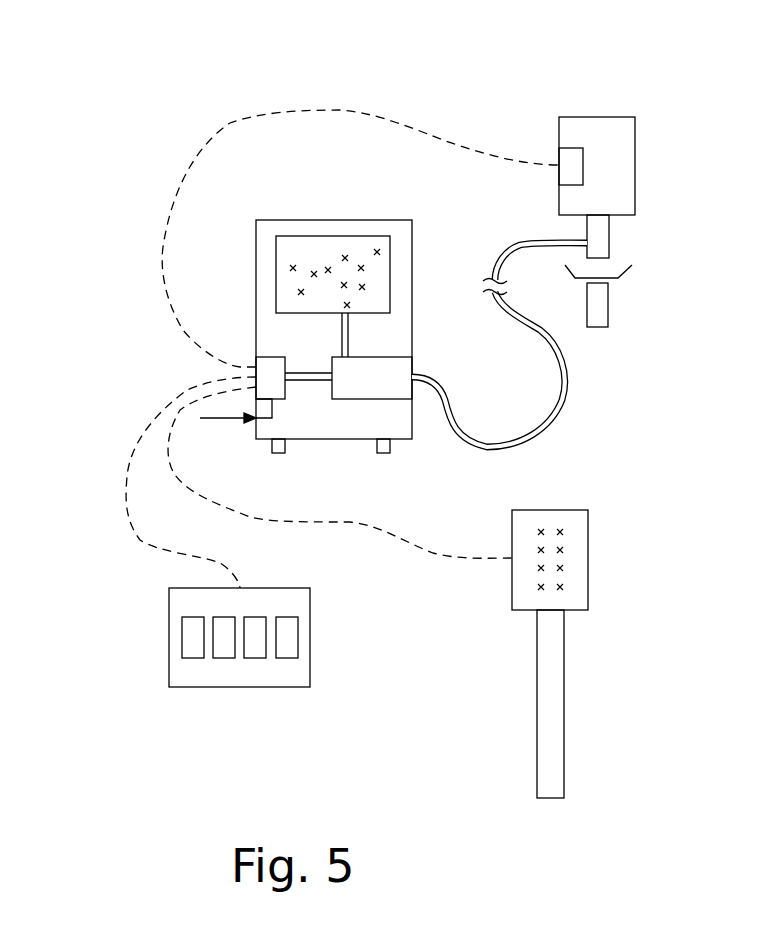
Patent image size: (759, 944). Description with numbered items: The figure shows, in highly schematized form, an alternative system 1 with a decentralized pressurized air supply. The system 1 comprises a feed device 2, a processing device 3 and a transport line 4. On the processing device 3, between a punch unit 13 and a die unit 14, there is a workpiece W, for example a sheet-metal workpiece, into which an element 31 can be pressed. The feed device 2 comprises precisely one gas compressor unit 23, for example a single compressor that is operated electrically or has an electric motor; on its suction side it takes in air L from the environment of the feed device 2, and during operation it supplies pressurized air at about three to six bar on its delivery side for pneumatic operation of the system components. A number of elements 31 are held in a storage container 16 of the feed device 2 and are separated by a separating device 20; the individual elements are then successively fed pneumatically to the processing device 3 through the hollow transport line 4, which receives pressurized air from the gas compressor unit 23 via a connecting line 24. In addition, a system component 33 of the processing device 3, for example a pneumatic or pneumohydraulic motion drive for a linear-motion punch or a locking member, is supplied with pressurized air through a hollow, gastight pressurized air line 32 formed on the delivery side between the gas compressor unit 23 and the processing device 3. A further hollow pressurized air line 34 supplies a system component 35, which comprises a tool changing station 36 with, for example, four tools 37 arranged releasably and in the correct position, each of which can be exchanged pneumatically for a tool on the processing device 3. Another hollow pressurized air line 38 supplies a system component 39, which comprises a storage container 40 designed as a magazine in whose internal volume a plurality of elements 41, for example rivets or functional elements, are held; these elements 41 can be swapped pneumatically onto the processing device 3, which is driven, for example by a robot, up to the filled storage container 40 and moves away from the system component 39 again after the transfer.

The system 1 is at (470, 100).
The feed device 2 is at (270, 205).
The processing device 3 is at (648, 132).
The transport line 4 is at (567, 402).
The punch unit 13 is at (625, 235).
The die unit 14 is at (628, 316).
The storage container 16 is at (390, 272).
The separating device 20 is at (362, 343).
The gas compressor unit 23 is at (268, 365).
The connecting line 24 is at (305, 382).
The element 31 is at (314, 270).
The pressurized air line 32 is at (273, 113).
The system component 33 is at (572, 160).
The pressurized air line 34 is at (125, 482).
The system component 35 is at (158, 660).
The tool changing station 36 is at (169, 611).
The tools 37 is at (190, 650).
The pressurized air line 38 is at (347, 522).
The system component 39 is at (605, 600).
The storage container 40 is at (588, 553).
The elements 41 is at (543, 526).
The workpiece W is at (628, 272).
The air L is at (220, 420).